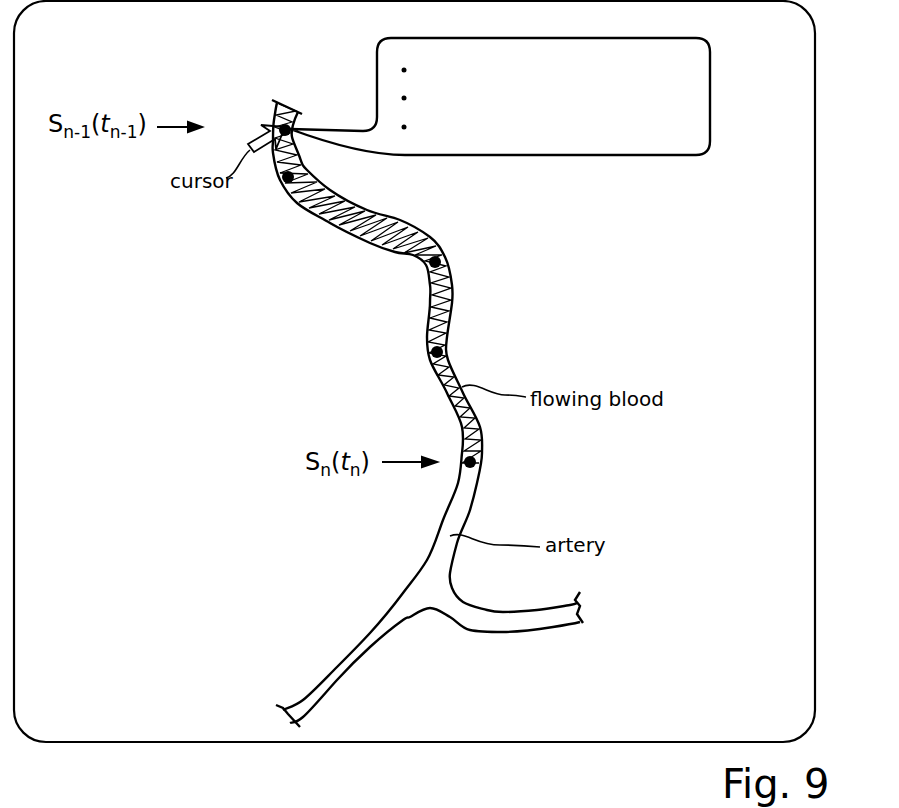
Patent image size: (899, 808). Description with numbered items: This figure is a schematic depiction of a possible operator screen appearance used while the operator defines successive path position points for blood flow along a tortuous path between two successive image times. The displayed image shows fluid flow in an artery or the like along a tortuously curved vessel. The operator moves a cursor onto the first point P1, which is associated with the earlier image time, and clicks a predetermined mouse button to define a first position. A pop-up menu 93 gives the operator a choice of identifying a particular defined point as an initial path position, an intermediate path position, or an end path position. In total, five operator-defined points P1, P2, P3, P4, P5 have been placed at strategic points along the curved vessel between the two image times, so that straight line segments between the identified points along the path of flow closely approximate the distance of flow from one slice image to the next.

The pop-up menu 93 is at (712, 63).
The first point P1 is at (283, 126).
The operator-defined point P2 is at (288, 180).
The operator-defined point P3 is at (437, 262).
The operator-defined point P4 is at (440, 352).
The end point P5 is at (472, 464).